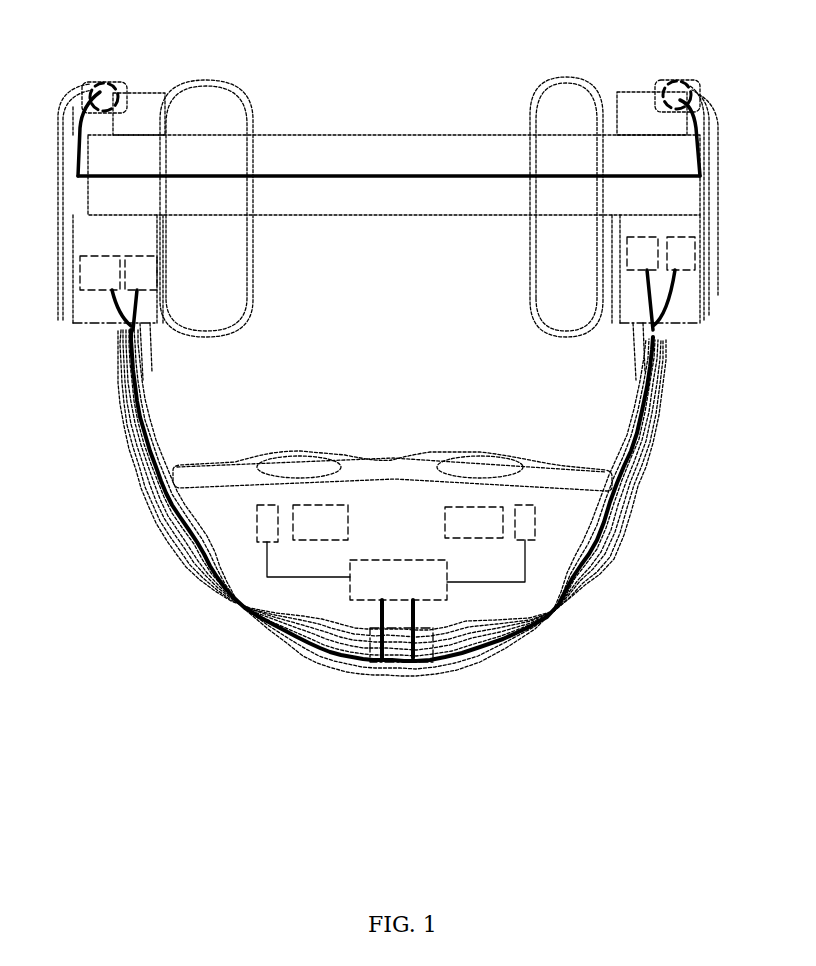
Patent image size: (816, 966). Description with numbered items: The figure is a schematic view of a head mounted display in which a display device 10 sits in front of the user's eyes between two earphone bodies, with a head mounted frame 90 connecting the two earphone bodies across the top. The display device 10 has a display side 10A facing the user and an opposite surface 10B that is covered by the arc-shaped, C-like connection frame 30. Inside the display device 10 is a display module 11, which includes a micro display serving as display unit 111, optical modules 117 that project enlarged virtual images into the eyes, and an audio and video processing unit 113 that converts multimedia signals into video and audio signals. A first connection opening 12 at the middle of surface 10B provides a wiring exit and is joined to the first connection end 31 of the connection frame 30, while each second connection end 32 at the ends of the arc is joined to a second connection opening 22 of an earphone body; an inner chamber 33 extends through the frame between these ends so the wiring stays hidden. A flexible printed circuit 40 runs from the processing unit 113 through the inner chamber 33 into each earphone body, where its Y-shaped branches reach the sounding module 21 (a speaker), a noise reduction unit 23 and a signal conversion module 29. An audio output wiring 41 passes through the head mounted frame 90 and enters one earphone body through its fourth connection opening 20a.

The display device 10 is at (392, 437).
The display side 10A is at (233, 460).
The surface opposite to the display side 10B is at (560, 587).
The display module 11 is at (349, 624).
The display unit 111 is at (243, 537).
The audio and video processing unit 113 is at (343, 600).
The optical module 117 is at (323, 545).
The first connection opening 12 is at (450, 643).
The fourth connection opening 20a is at (123, 92).
The sounding module 21 is at (110, 277).
The second connection opening 22 is at (123, 333).
The noise reduction unit 23 is at (137, 260).
The signal conversion module 29 is at (693, 253).
The connection frame 30 is at (140, 497).
The first connection end 31 is at (447, 658).
The second connection end 32 is at (150, 360).
The inner chamber 33 is at (653, 442).
The flexible printed circuit 40 is at (600, 540).
The audio output wiring 41 is at (237, 185).
The head mounted frame 90 is at (382, 132).